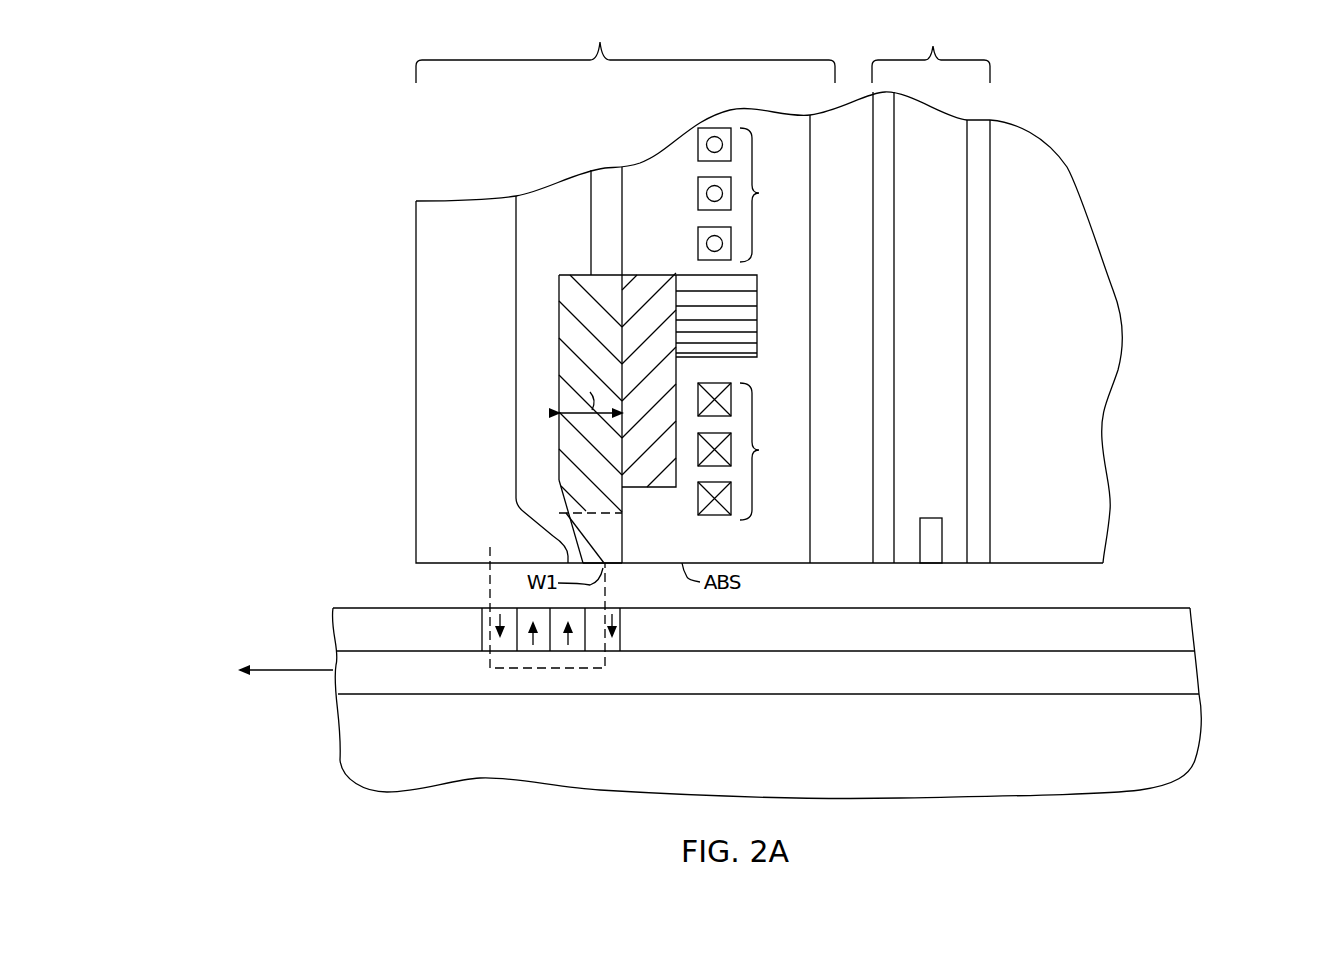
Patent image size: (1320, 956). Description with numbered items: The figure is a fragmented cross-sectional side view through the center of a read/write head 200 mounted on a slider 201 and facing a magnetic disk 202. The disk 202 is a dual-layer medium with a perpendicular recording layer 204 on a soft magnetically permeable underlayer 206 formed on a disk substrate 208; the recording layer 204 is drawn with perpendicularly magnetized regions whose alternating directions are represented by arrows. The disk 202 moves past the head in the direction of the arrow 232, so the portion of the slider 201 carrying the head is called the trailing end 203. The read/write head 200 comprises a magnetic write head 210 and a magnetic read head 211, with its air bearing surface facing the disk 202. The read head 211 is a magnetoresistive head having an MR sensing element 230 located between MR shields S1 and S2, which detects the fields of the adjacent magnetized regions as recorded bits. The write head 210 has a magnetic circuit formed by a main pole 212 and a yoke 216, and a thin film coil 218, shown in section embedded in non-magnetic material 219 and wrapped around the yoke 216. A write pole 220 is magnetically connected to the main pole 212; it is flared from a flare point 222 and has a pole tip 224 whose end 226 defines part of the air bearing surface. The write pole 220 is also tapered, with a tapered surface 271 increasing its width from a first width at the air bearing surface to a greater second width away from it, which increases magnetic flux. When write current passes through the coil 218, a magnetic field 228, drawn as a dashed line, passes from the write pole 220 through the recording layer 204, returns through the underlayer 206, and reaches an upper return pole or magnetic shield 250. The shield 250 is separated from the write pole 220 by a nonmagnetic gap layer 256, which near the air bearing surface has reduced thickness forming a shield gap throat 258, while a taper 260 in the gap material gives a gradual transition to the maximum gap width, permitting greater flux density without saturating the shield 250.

The read/write head 200 is at (352, 132).
The slider 201 is at (1092, 278).
The magnetic disk 202 is at (1225, 713).
The trailing end 203 is at (350, 345).
The recording layer 204 is at (1180, 625).
The underlayer 206 is at (1190, 678).
The disk substrate 208 is at (1182, 768).
The magnetic write head 210 is at (625, 142).
The magnetic read head 211 is at (931, 286).
The main pole 212 is at (647, 300).
The yoke 216 is at (748, 275).
The thin film coil 218 is at (759, 193).
The non-magnetic material 219 is at (641, 204).
The write pole 220 is at (580, 287).
The flare point 222 is at (600, 513).
The pole tip 224 is at (609, 547).
The end 226 is at (613, 565).
The magnetic field 228 is at (490, 585).
The MR sensing element 230 is at (930, 530).
The arrow 232 is at (285, 668).
The upper return pole 250 is at (462, 217).
The nonmagnetic gap layer 256 is at (525, 332).
The shield gap throat 258 is at (552, 520).
The taper 260 is at (516, 513).
The tapered surface 271 is at (566, 513).
The MR shield S1 is at (978, 360).
The MR shield S2 is at (885, 310).